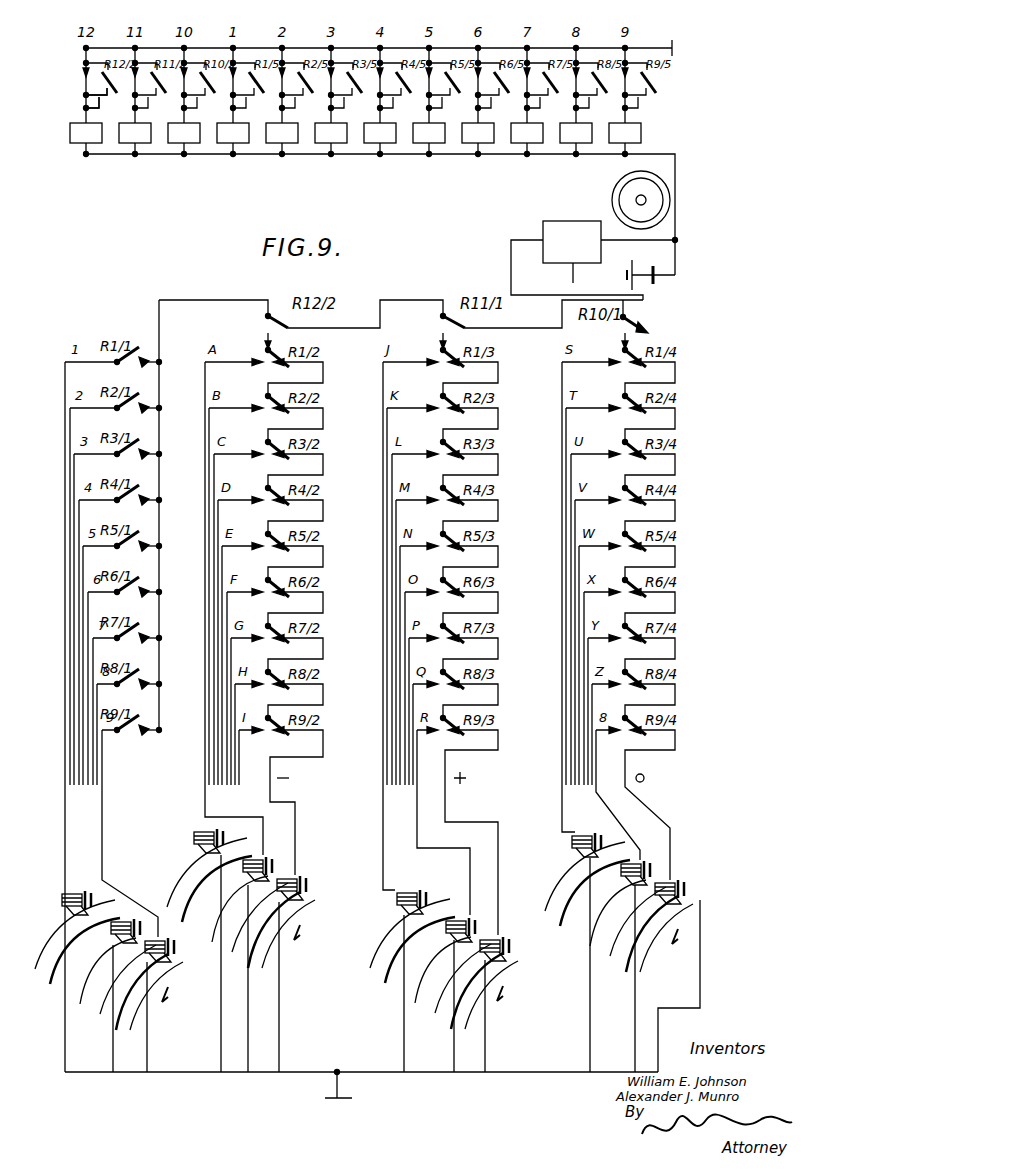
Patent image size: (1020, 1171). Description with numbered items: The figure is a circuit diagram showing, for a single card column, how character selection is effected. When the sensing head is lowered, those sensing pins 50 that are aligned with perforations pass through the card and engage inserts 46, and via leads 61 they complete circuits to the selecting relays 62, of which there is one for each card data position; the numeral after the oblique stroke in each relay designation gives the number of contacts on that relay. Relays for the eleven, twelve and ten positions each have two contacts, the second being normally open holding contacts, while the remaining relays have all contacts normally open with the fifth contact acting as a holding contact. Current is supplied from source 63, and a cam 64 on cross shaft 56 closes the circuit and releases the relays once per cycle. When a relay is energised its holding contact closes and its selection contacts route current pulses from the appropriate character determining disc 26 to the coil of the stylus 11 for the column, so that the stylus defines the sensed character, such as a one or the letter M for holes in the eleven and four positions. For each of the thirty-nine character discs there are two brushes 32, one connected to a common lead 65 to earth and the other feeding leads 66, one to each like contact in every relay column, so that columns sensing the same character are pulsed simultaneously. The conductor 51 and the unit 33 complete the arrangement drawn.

The sensing pins 50 is at (86, 66).
The inserts 46 is at (86, 95).
The leads 61 is at (86, 108).
The relays 62 is at (70, 136).
The supply conductor 51 is at (649, 48).
The cross shaft 56 is at (636, 200).
The cam 64 is at (670, 201).
The control unit 33 is at (567, 233).
The stylus 11 is at (571, 273).
The source 63 is at (656, 281).
The leads 66 is at (91, 798).
The brushes 32 is at (84, 889).
The character determining disc 26 is at (118, 972).
The common lead 65 is at (520, 1063).